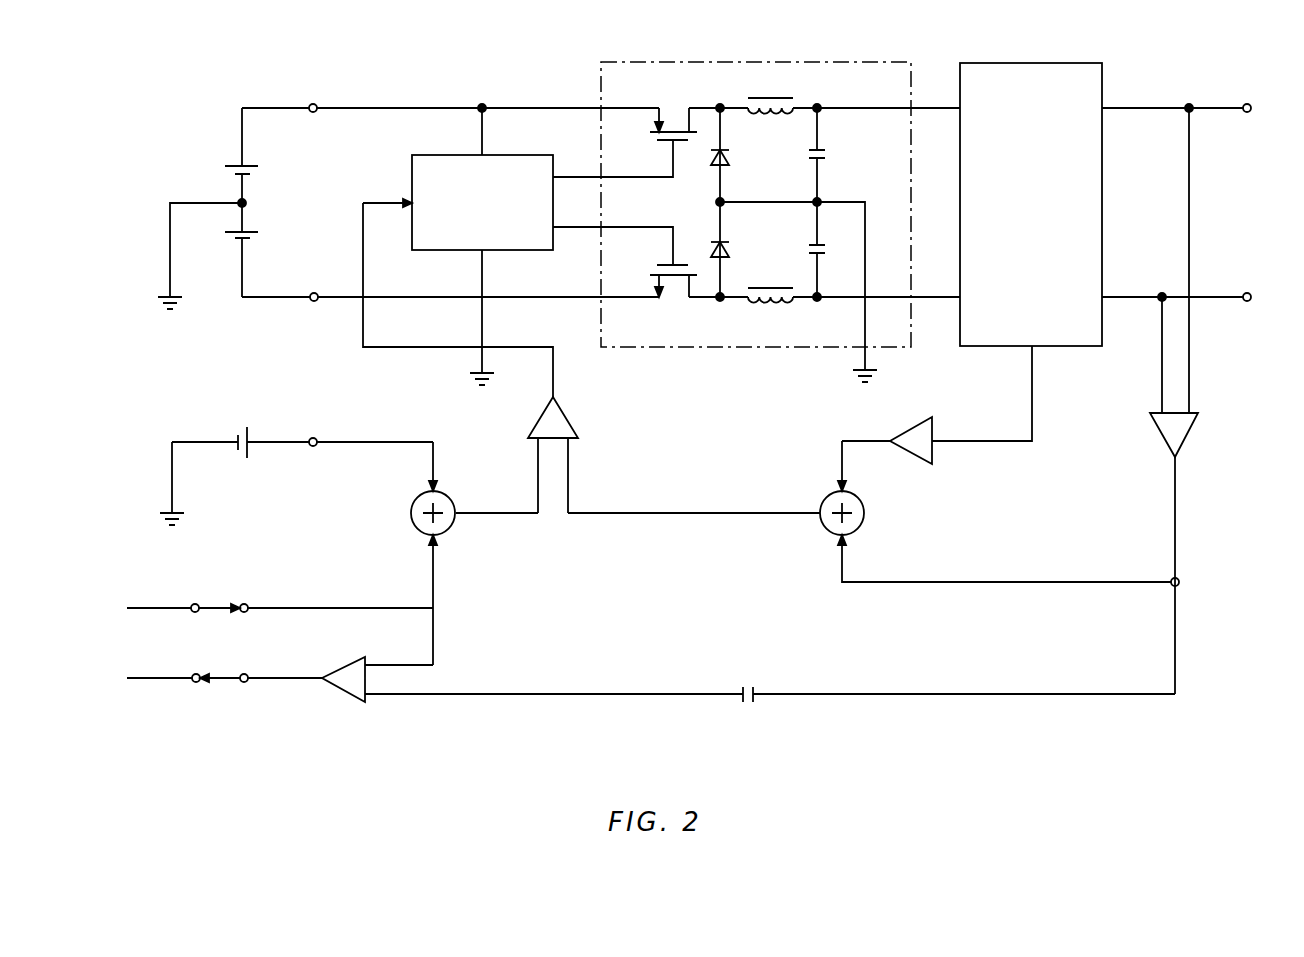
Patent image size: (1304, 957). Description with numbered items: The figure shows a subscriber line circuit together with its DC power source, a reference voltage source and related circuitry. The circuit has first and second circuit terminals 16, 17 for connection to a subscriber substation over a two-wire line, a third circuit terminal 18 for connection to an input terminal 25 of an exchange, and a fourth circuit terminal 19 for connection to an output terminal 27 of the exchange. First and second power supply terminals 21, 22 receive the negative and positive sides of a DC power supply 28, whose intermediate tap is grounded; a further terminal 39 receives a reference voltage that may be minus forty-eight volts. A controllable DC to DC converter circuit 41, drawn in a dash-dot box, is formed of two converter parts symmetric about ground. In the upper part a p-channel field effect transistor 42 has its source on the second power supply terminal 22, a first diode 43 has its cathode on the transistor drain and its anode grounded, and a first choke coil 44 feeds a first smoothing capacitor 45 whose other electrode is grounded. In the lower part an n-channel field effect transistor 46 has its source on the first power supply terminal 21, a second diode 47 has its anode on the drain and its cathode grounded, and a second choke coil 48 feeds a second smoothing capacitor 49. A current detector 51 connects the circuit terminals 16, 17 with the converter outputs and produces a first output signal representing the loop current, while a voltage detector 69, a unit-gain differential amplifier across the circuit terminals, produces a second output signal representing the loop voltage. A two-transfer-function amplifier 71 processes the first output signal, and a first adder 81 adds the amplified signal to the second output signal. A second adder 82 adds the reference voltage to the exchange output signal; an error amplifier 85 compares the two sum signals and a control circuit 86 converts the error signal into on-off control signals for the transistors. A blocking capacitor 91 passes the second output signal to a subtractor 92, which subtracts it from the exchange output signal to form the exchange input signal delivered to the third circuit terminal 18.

The first circuit terminal 16 is at (1251, 104).
The second circuit terminal 17 is at (1251, 293).
The third circuit terminal 18 is at (247, 682).
The fourth circuit terminal 19 is at (247, 604).
The first power supply terminal 21 is at (311, 301).
The second power supply terminal 22 is at (317, 103).
The input terminal 25 is at (193, 682).
The output terminal 27 is at (192, 604).
The DC power supply 28 is at (243, 186).
The terminal 39 is at (317, 438).
The DC to DC converter circuit 41 is at (632, 347).
The p-channel field effect transistor 42 is at (627, 103).
The first diode 43 is at (729, 167).
The first choke coil 44 is at (773, 97).
The first smoothing capacitor 45 is at (827, 147).
The n-channel field effect transistor 46 is at (685, 294).
The second diode 47 is at (731, 255).
The second choke coil 48 is at (778, 302).
The second smoothing capacitor 49 is at (816, 246).
The current detector 51 is at (1030, 63).
The voltage detector 69 is at (1183, 444).
The two-transfer-function amplifier 71 is at (933, 463).
The first adder 81 is at (821, 527).
The second adder 82 is at (447, 533).
The error amplifier 85 is at (578, 428).
The control circuit 86 is at (507, 155).
The blocking capacitor 91 is at (753, 702).
The subtractor 92 is at (353, 700).